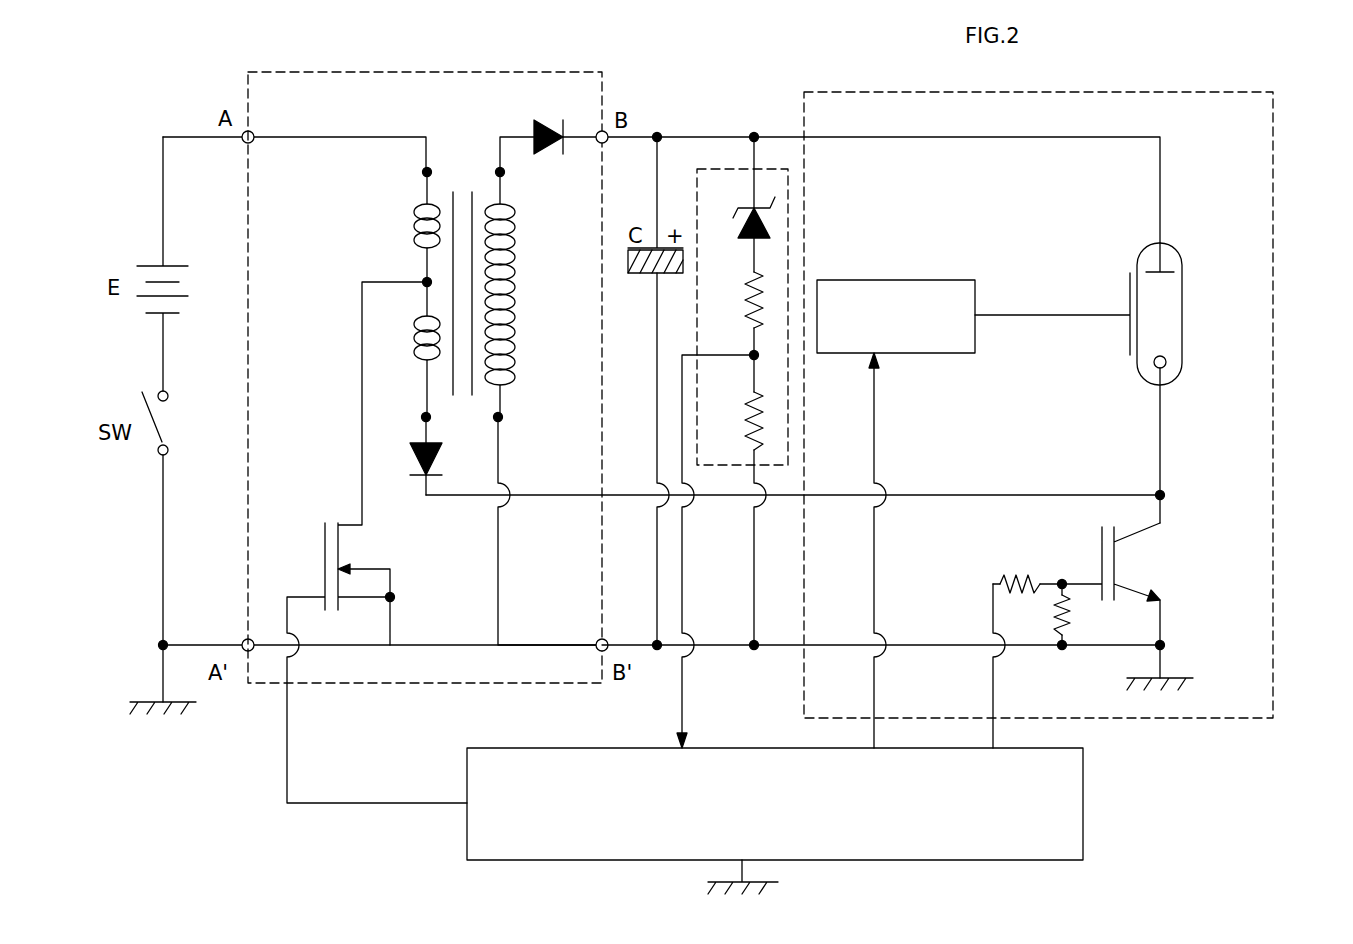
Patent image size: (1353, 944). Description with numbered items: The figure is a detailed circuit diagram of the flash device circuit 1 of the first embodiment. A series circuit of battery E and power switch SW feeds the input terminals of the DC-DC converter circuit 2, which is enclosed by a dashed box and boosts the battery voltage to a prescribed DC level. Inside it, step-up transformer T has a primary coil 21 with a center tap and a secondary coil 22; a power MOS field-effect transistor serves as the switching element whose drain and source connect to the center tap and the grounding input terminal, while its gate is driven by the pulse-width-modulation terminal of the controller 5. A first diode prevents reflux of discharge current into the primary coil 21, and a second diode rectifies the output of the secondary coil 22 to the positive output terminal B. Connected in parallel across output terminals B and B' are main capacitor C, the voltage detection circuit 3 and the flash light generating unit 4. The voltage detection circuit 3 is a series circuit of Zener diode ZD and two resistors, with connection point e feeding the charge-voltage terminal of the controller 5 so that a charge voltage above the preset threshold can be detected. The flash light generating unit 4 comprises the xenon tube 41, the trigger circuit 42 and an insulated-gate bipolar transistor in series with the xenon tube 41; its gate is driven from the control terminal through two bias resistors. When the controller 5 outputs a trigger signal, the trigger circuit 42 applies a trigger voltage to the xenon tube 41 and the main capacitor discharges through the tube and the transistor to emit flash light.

The flash device circuit 1 is at (742, 90).
The DC-DC converter circuit 2 is at (248, 72).
The primary coil 21 is at (420, 233).
The secondary coil 22 is at (516, 266).
The voltage detection circuit 3 is at (788, 410).
The flash light generating unit 4 is at (1273, 205).
The xenon tube 41 is at (1182, 322).
The trigger circuit 42 is at (875, 280).
The controller 5 is at (1083, 803).